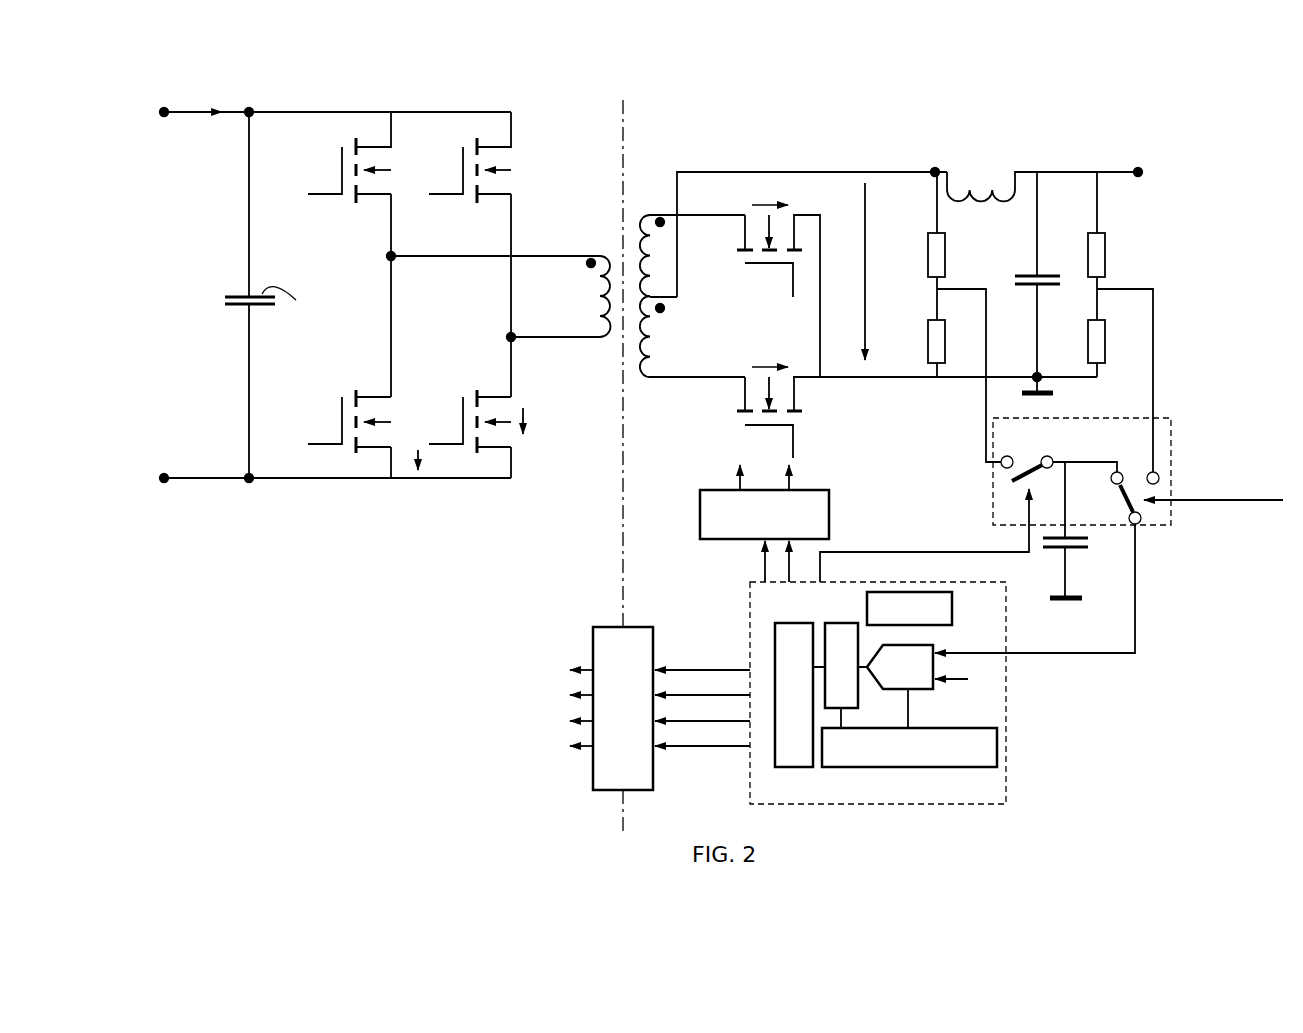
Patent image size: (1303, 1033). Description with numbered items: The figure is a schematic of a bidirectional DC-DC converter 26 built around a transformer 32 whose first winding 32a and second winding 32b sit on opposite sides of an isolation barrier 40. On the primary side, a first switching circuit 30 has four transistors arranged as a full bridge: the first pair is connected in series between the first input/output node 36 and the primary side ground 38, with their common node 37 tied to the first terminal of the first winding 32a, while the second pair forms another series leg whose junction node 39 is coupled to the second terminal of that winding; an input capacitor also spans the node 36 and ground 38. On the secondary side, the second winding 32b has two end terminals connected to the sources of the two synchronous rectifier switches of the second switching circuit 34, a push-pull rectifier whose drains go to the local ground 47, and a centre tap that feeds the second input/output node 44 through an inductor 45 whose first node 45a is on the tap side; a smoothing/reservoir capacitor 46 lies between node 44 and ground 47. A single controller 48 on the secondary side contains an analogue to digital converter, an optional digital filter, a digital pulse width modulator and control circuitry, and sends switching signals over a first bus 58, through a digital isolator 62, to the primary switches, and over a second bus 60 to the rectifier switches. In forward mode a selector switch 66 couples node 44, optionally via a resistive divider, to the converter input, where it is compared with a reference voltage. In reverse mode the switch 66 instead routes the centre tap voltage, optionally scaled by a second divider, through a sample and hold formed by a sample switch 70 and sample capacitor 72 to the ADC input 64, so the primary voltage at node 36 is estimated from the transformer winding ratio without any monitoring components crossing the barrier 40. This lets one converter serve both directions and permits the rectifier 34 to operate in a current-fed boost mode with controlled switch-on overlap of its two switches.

The bidirectional DC-DC converter 26 is at (385, 603).
The first switching circuit 30 is at (379, 102).
The transformer 32 is at (611, 243).
The first winding 32a is at (600, 340).
The second winding 32b is at (651, 380).
The second switching circuit 34 is at (904, 138).
The first input/output node 36 is at (163, 109).
The common node 37 is at (389, 256).
The primary side ground 38 is at (165, 484).
The node 39 is at (509, 337).
The isolation barrier 40 is at (624, 112).
The second input/output node 44 is at (1139, 168).
The inductor 45 is at (996, 180).
The first node of the inductor 45a is at (936, 168).
The smoothing/reservoir capacitor 46 is at (1028, 290).
The local ground 47 is at (1022, 393).
The controller 48 is at (1006, 766).
The first bus 58 is at (708, 668).
The second bus 60 is at (763, 568).
The digital isolator 62 is at (653, 780).
The input of the ADC 64 is at (1137, 660).
The selector switch 66 is at (1132, 465).
The sample switch 70 is at (1020, 452).
The sample capacitor 72 is at (1102, 543).